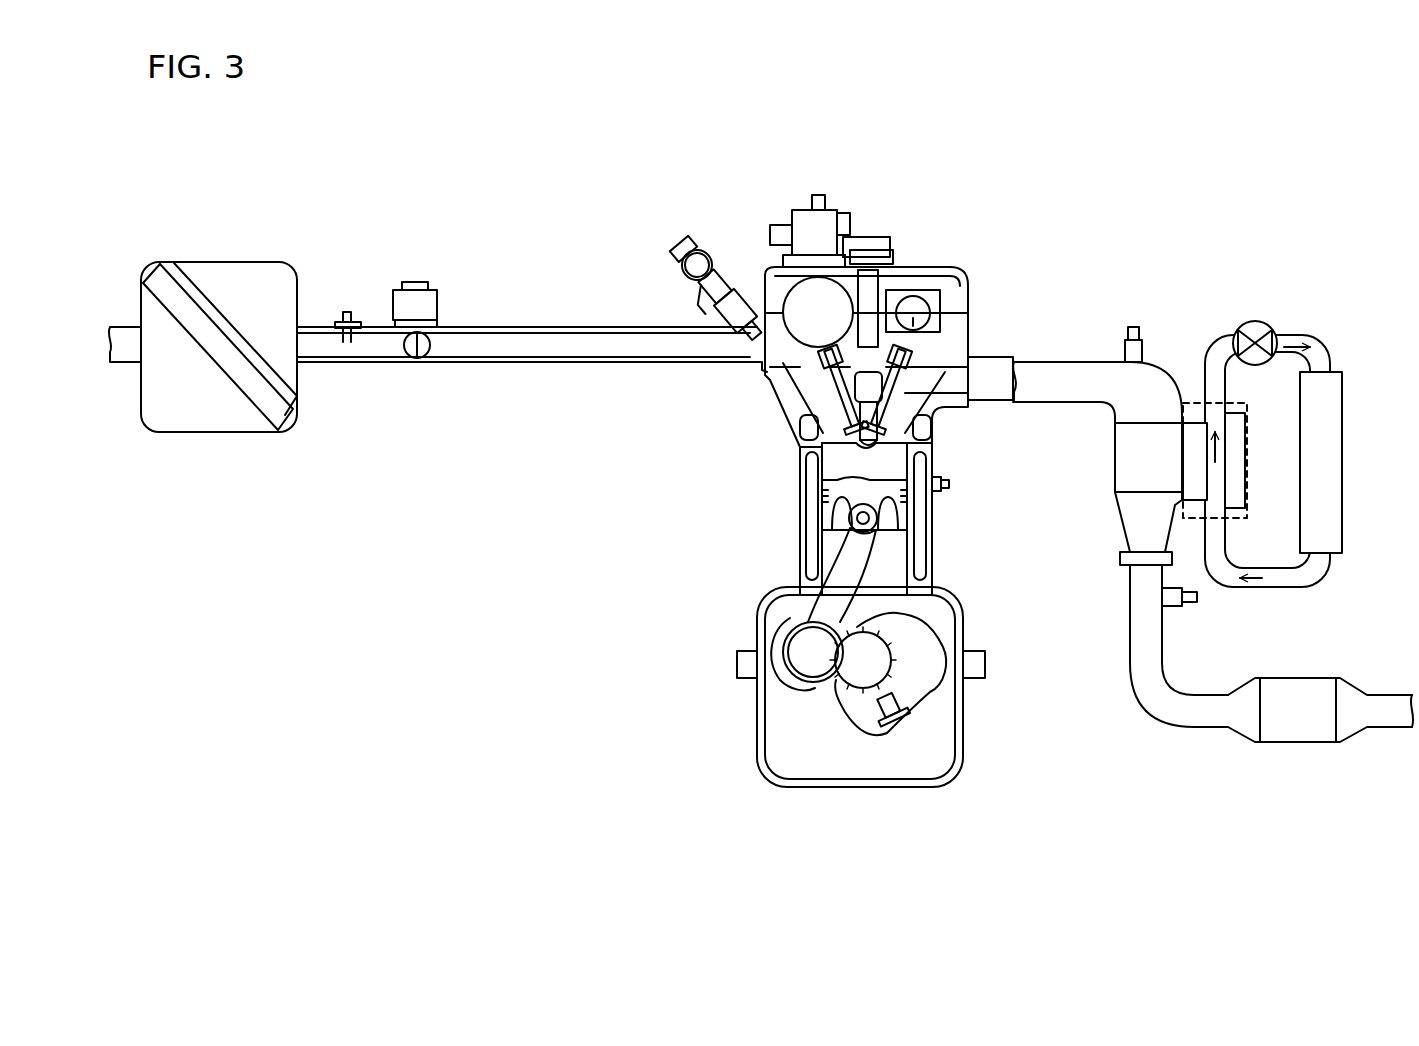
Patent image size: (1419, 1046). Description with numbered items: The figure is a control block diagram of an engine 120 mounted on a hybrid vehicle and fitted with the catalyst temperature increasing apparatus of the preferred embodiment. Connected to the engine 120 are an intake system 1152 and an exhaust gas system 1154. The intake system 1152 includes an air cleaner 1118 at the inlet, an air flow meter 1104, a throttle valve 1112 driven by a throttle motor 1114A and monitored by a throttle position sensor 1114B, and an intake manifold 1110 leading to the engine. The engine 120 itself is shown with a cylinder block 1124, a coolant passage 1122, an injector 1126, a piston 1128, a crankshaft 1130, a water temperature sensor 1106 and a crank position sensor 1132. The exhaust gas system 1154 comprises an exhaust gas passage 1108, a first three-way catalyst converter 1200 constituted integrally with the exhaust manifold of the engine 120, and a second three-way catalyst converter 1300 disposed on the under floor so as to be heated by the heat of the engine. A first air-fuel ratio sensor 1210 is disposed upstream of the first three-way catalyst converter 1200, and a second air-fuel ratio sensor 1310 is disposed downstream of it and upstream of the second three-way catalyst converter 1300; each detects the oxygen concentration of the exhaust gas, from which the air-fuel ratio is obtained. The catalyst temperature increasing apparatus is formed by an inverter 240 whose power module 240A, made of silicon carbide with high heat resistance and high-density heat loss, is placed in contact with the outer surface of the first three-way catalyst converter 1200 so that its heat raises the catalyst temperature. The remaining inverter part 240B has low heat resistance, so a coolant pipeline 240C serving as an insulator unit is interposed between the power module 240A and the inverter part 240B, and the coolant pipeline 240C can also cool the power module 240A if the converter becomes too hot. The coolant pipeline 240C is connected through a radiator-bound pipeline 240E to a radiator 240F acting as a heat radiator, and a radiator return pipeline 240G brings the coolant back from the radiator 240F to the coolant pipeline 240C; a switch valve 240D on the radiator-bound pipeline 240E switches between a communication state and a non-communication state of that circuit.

The engine 120 is at (840, 128).
The air flow meter 1104 is at (350, 312).
The water temperature sensor 1106 is at (948, 487).
The exhaust gas passage 1108 is at (1033, 360).
The intake manifold 1110 is at (703, 366).
The throttle valve 1112 is at (406, 354).
The throttle motor 1114A is at (438, 292).
The throttle position sensor 1114B is at (438, 316).
The air cleaner 1118 is at (283, 434).
The coolant passage 1122 is at (921, 545).
The cylinder block 1124 is at (802, 448).
The injector 1126 is at (726, 270).
The piston 1128 is at (832, 520).
The crankshaft 1130 is at (926, 692).
The crank position sensor 1132 is at (925, 705).
The intake system 1152 is at (538, 264).
The exhaust gas system 1154 is at (1090, 324).
The first three-way catalyst converter 1200 is at (1128, 447).
The first air-fuel ratio sensor 1210 is at (1143, 332).
The second three-way catalyst converter 1300 is at (1293, 745).
The second air-fuel ratio sensor 1310 is at (1182, 608).
The inverter 240 is at (1240, 515).
The power module 240A is at (1193, 423).
The inverter part 240B is at (1249, 410).
The coolant pipeline 240C is at (1220, 472).
The switch valve 240D is at (1258, 324).
The radiator-bound pipeline 240E is at (1317, 350).
The radiator 240F is at (1332, 472).
The radiator return pipeline 240G is at (1268, 582).